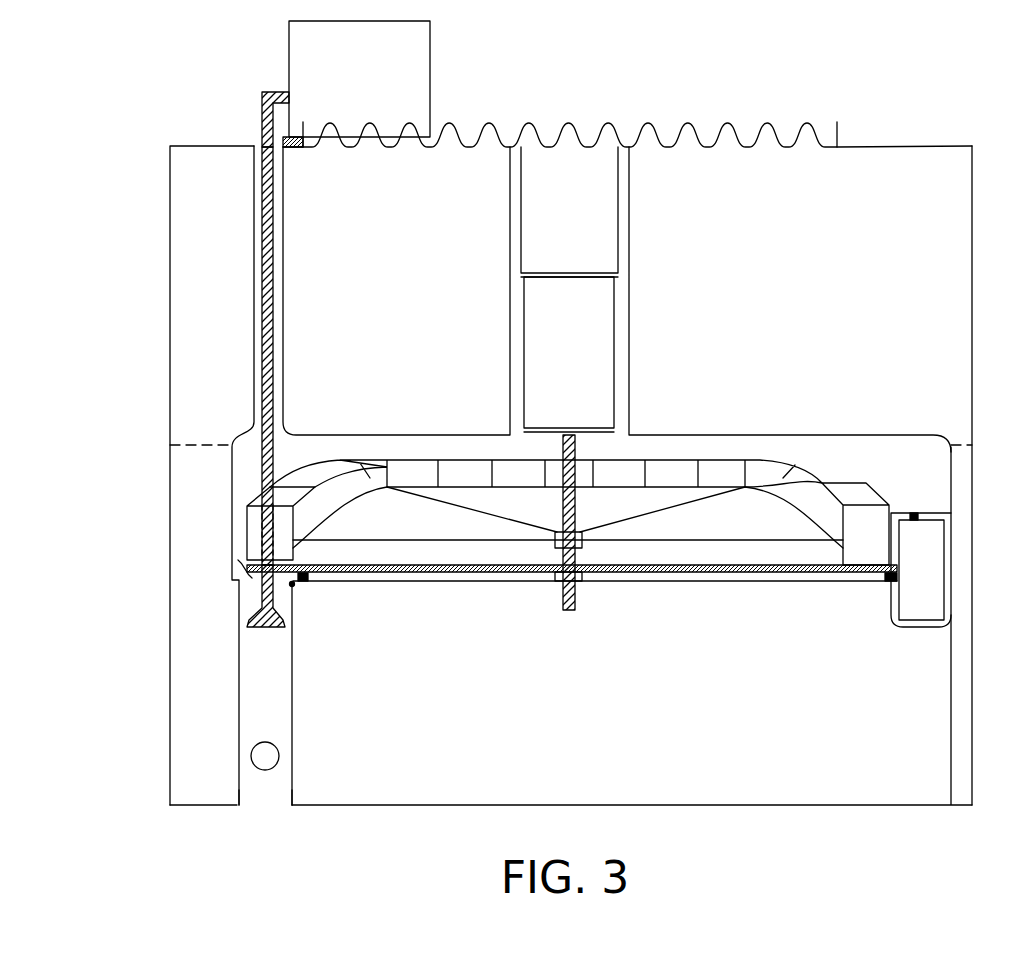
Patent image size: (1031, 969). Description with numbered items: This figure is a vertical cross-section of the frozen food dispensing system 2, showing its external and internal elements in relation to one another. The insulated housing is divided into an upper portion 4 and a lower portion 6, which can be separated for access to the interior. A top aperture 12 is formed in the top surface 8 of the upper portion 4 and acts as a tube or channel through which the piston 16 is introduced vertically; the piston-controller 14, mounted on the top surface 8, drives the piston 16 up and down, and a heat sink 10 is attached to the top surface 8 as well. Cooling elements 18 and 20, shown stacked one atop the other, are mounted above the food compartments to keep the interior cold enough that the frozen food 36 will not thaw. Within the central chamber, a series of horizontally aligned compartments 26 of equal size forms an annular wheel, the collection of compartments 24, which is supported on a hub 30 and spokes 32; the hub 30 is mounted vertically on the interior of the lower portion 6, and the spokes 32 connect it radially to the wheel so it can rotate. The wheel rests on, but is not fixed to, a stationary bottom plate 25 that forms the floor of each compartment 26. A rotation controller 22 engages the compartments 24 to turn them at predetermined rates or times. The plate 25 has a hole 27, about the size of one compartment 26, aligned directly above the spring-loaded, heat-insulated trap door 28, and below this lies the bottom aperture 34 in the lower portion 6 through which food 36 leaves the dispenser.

The frozen food dispensing system 2 is at (146, 455).
The upper portion of insulating housing 4 is at (180, 352).
The lower portion of insulating housing 6 is at (178, 708).
The top surface 8 is at (890, 146).
The heat sink 10 is at (728, 122).
The top aperture 12 is at (260, 147).
The piston-controller 14 is at (410, 65).
The piston 16 is at (262, 100).
The cooling element 18 is at (605, 200).
The cooling element 20 is at (605, 355).
The rotation controller 22 is at (935, 548).
The collection of compartments 24 is at (670, 462).
The bottom plate 25 is at (428, 575).
The compartment 26 is at (283, 485).
The hole 27 is at (255, 585).
The trap door 28 is at (292, 612).
The hub 30 is at (580, 546).
The spokes 32 is at (680, 546).
The bottom aperture 34 is at (267, 800).
The frozen food 36 is at (275, 756).